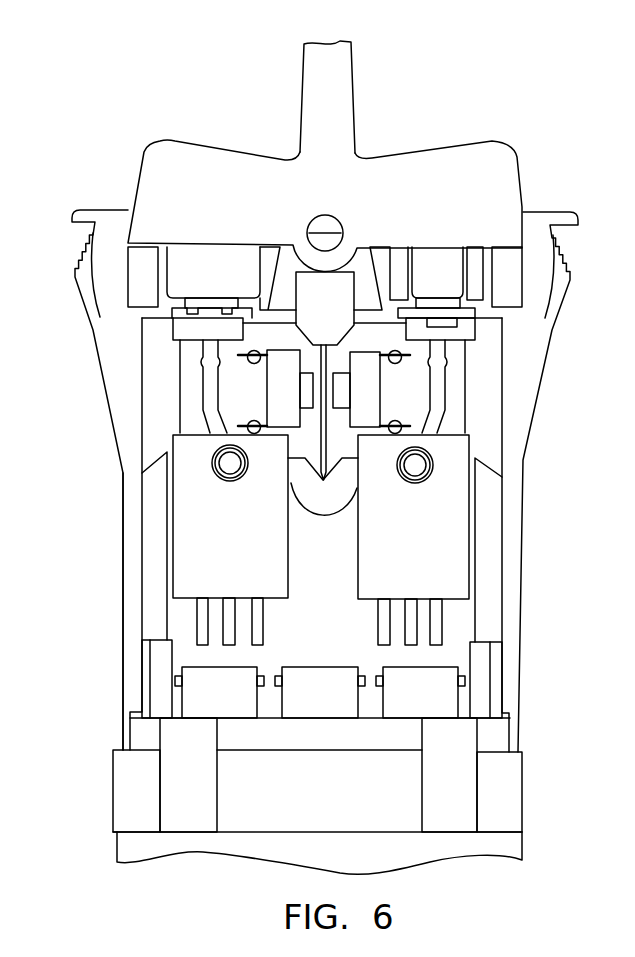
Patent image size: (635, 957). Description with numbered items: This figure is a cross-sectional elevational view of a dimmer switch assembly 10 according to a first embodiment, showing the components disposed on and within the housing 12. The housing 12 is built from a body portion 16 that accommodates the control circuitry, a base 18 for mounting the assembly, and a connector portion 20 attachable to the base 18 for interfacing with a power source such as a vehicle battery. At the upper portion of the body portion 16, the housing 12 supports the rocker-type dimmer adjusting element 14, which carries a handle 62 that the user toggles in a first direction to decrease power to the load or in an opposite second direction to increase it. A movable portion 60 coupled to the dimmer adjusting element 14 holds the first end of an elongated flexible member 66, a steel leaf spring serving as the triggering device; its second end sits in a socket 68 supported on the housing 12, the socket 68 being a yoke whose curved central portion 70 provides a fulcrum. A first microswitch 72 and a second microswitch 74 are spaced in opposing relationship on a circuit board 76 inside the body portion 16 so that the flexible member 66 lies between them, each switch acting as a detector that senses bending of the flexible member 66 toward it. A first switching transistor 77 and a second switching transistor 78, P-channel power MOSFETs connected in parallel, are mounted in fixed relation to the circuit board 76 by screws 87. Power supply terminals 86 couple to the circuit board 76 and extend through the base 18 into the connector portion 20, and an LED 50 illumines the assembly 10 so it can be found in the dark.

The dimmer switch assembly 10 is at (563, 128).
The housing 12 is at (548, 384).
The dimmer adjusting element 14 is at (441, 174).
The body portion 16 is at (122, 557).
The base 18 is at (512, 768).
The connector portion 20 is at (503, 843).
The LED 50 is at (448, 268).
The movable portion 60 is at (345, 300).
The handle 62 is at (306, 92).
The elongated flexible member 66 is at (325, 447).
The socket 68 is at (340, 487).
The curved central portion 70 is at (318, 465).
The first microswitch 72 is at (366, 392).
The second microswitch 74 is at (283, 402).
The circuit board 76 is at (458, 400).
The first switching transistor 77 is at (252, 548).
The second switching transistor 78 is at (387, 568).
The power supply terminals 86 is at (397, 705).
The screws 87 is at (239, 484).